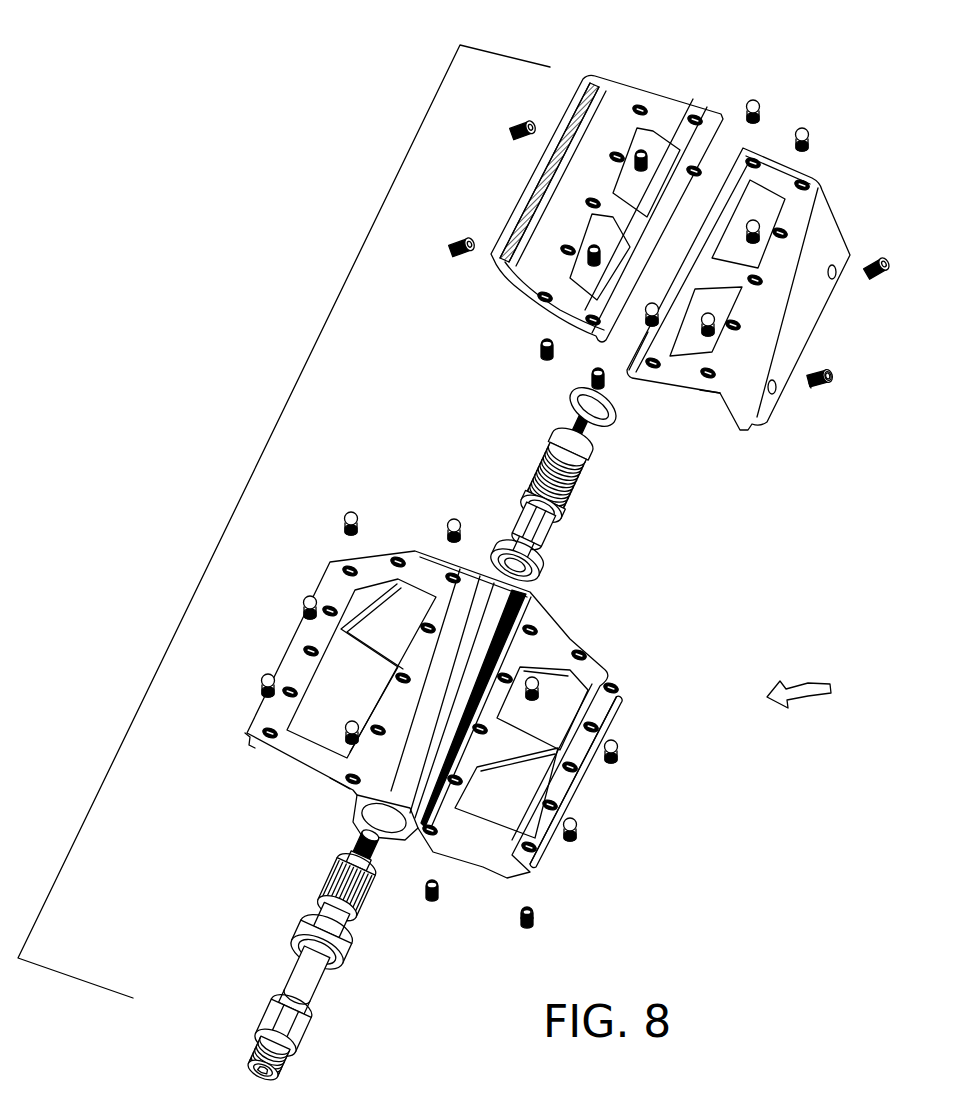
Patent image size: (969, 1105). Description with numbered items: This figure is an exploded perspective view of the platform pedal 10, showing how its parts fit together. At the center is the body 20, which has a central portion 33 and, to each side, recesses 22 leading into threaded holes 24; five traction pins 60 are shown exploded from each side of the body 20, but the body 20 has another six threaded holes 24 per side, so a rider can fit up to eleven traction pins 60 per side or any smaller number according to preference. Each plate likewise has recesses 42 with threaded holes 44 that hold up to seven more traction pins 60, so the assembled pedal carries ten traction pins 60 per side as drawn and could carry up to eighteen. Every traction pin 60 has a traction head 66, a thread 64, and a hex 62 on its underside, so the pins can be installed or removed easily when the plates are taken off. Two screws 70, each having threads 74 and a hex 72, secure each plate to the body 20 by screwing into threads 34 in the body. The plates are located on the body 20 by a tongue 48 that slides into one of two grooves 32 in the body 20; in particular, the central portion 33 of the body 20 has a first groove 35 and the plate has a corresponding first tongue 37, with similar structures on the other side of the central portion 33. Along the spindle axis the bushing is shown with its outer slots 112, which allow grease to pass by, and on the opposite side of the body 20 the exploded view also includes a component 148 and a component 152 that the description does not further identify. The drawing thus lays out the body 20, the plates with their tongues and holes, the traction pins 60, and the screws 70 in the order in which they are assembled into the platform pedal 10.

The platform pedal 10 is at (814, 695).
The body 20 is at (446, 733).
The recesses 22 is at (347, 778).
The threaded holes 24 is at (355, 781).
The grooves 32 is at (255, 748).
The central portion 33 is at (397, 796).
The threads 34 is at (600, 719).
The first groove 35 is at (409, 818).
The first tongue 37 is at (636, 364).
The recesses 42 is at (712, 384).
The threaded holes 44 is at (706, 378).
The tongue 48 is at (638, 297).
The traction pins 60 is at (348, 733).
The hex 62 is at (533, 905).
The thread 64 is at (520, 914).
The traction head 66 is at (528, 927).
The screws 70 is at (510, 131).
The hex 72 is at (830, 380).
The threads 74 is at (812, 387).
The outer slots 112 is at (332, 878).
The bearing 148 is at (552, 533).
The threaded nut 152 is at (563, 517).